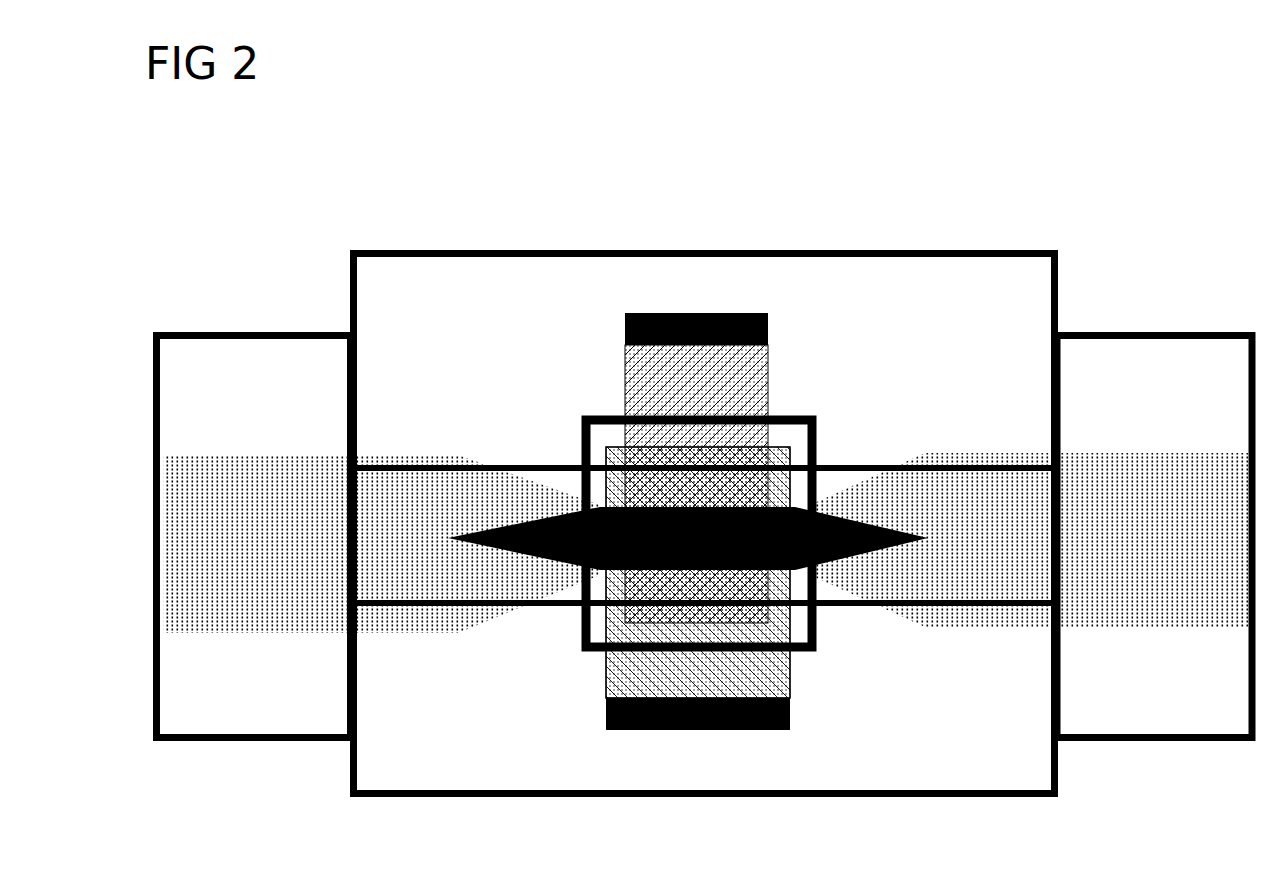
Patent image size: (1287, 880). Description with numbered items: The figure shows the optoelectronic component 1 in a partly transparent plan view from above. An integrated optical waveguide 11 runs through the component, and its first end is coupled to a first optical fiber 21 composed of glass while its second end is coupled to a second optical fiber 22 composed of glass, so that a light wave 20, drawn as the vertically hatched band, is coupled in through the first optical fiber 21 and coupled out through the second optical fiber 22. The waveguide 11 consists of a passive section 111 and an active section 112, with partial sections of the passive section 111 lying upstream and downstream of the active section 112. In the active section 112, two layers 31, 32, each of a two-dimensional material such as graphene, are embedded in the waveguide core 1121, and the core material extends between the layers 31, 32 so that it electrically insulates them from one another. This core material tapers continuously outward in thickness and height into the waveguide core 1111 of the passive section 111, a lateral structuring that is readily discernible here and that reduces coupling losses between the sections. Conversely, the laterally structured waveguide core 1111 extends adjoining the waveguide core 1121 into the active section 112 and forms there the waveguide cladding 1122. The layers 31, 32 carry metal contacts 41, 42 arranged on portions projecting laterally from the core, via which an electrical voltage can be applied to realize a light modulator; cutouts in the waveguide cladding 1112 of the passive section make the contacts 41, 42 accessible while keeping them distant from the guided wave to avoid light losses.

The optoelectronic component 1 is at (1100, 214).
The optical waveguide 11 is at (704, 538).
The passive section 111 is at (454, 648).
The active section 112 is at (689, 758).
The waveguide core of the passive section 1111 is at (433, 493).
The waveguide cladding of the passive section 1112 is at (475, 283).
The waveguide core of the active section 1121 is at (752, 573).
The waveguide cladding of the active section 1122 is at (597, 480).
The light wave 20 is at (252, 478).
The first optical fiber 21 is at (262, 707).
The second optical fiber 22 is at (1173, 718).
The first layer of two-dimensional material 31 is at (748, 383).
The second layer of two-dimensional material 32 is at (617, 670).
The first metal contact 41 is at (730, 308).
The second metal contact 42 is at (762, 732).